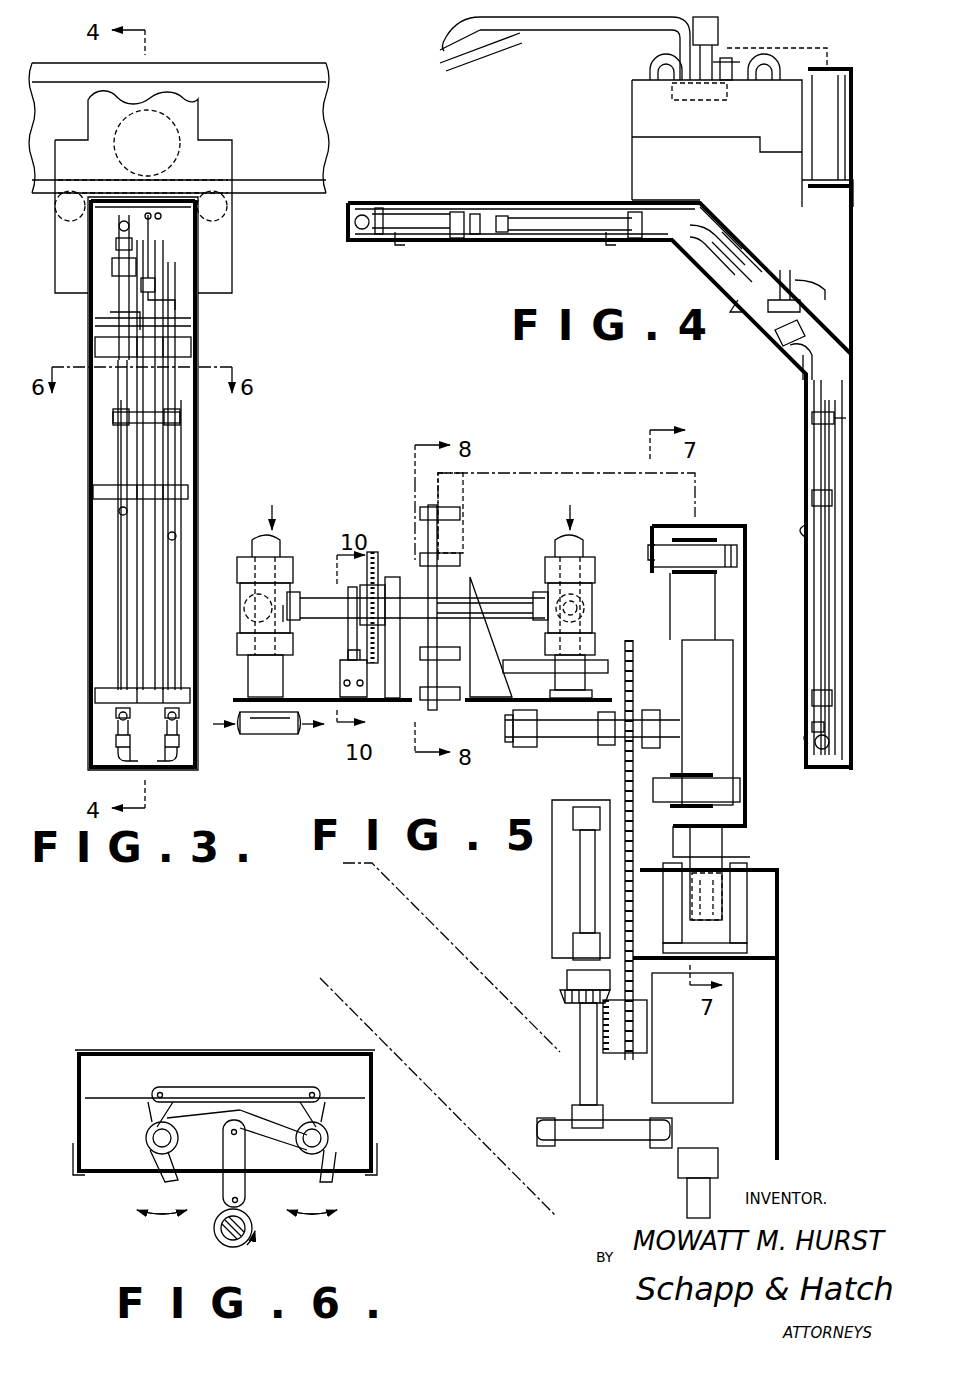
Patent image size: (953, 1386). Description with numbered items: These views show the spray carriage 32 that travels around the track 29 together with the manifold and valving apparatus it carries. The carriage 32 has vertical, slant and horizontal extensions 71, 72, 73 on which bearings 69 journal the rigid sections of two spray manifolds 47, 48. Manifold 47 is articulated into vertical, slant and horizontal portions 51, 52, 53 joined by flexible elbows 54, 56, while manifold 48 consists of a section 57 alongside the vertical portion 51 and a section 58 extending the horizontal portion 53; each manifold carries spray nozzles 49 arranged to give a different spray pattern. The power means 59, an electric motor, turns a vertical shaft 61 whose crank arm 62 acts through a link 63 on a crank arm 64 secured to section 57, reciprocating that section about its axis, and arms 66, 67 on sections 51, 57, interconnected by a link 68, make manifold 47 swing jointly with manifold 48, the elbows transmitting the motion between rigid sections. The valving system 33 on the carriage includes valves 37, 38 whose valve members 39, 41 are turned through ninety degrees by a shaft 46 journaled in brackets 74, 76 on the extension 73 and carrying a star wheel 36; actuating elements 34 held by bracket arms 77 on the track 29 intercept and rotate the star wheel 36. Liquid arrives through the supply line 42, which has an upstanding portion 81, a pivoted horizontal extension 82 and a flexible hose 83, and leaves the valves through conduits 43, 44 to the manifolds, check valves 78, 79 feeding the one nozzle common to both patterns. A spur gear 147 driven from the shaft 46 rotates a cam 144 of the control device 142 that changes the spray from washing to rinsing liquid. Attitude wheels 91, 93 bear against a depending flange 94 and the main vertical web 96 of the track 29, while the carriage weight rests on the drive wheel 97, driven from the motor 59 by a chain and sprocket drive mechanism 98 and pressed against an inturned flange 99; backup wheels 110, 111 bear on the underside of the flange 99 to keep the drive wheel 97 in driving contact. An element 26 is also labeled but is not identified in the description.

In FIG. 4, the support bracket 26 is at (830, 47).
In FIG. 3, the track 29 is at (269, 63).
In FIG. 4, the track 29 is at (853, 86).
In FIG. 5, the track 29 is at (734, 522).
In FIG. 3, the carriage 32 is at (86, 309).
In FIG. 4, the carriage 32 is at (705, 282).
In FIG. 6, the carriage 32 is at (128, 1050).
In FIG. 4, the valving system 33 is at (630, 123).
In FIG. 5, the valving system 33 is at (553, 470).
In FIG. 4, the actuating elements 34 is at (742, 62).
In FIG. 5, the actuating elements 34 is at (466, 498).
In FIG. 5, the star wheel 36 is at (428, 530).
In FIG. 4, the valve 37 is at (652, 76).
In FIG. 5, the valve 37 is at (286, 578).
In FIG. 4, the valve 38 is at (776, 80).
In FIG. 5, the valve 38 is at (547, 582).
In FIG. 5, the valve member 39 is at (283, 618).
In FIG. 5, the valve member 41 is at (592, 613).
In FIG. 4, the liquid supply line 42 is at (720, 28).
In FIG. 3, the conduit 43 is at (138, 558).
In FIG. 4, the conduit 43 is at (842, 632).
In FIG. 5, the conduit 43 is at (556, 742).
In FIG. 3, the conduit 44 is at (156, 458).
In FIG. 5, the conduit 44 is at (280, 735).
In FIG. 5, the shaft 46 is at (498, 598).
In FIG. 3, the spray manifold 47 is at (116, 590).
In FIG. 4, the spray manifold 47 is at (826, 568).
In FIG. 6, the spray manifold 47 is at (144, 1138).
In FIG. 3, the spray manifold 48 is at (178, 483).
In FIG. 6, the spray manifold 48 is at (330, 1138).
In FIG. 3, the spray nozzles 49 is at (120, 512).
In FIG. 4, the spray nozzles 49 is at (398, 240).
In FIG. 3, the vertical portion 51 is at (122, 640).
In FIG. 4, the vertical portion 51 is at (812, 444).
In FIG. 6, the vertical portion 51 is at (152, 1163).
In FIG. 3, the slant portion 52 is at (122, 296).
In FIG. 4, the slant portion 52 is at (748, 268).
In FIG. 3, the horizontal portion 53 is at (118, 228).
In FIG. 4, the horizontal portion 53 is at (548, 235).
In FIG. 4, the flexible elbow 54 is at (704, 216).
In FIG. 3, the flexible elbow 56 is at (120, 345).
In FIG. 4, the flexible elbow 56 is at (806, 372).
In FIG. 3, the manifold section 57 is at (173, 436).
In FIG. 5, the manifold section 57 is at (688, 1196).
In FIG. 6, the manifold section 57 is at (330, 1170).
In FIG. 4, the manifold section 58 is at (408, 218).
In FIG. 5, the power means 59 is at (700, 1059).
In FIG. 3, the vertical shaft 61 is at (145, 278).
In FIG. 4, the vertical shaft 61 is at (798, 283).
In FIG. 5, the vertical shaft 61 is at (586, 1062).
In FIG. 6, the vertical shaft 61 is at (229, 1241).
In FIG. 5, the crank arm 62 is at (572, 1122).
In FIG. 6, the crank arm 62 is at (218, 1226).
In FIG. 3, the link 63 is at (165, 300).
In FIG. 5, the link 63 is at (612, 1149).
In FIG. 6, the link 63 is at (226, 1190).
In FIG. 5, the crank arm 64 is at (688, 1152).
In FIG. 6, the crank arm 64 is at (236, 1114).
In FIG. 6, the arm 66 is at (152, 1110).
In FIG. 6, the arm 67 is at (316, 1120).
In FIG. 3, the link 68 is at (128, 422).
In FIG. 4, the link 68 is at (838, 414).
In FIG. 6, the link 68 is at (220, 1088).
In FIG. 3, the bearings 69 is at (113, 490).
In FIG. 4, the bearings 69 is at (458, 240).
In FIG. 4, the vertical extension 71 is at (848, 514).
In FIG. 4, the slant extension 72 is at (740, 244).
In FIG. 4, the horizontal extension 73 is at (556, 205).
In FIG. 5, the bracket 74 is at (386, 700).
In FIG. 5, the bracket 76 is at (488, 652).
In FIG. 5, the bracket arms 77 is at (505, 471).
In FIG. 4, the check valve 78 is at (473, 212).
In FIG. 4, the check valve 79 is at (505, 216).
In FIG. 4, the upstanding portion 81 is at (652, 42).
In FIG. 4, the horizontal extension 82 is at (546, 33).
In FIG. 4, the flexible hose 83 is at (436, 36).
In FIG. 5, the attitude wheel 91 is at (662, 553).
In FIG. 5, the attitude wheel 93 is at (716, 780).
In FIG. 5, the depending flange 94 is at (648, 546).
In FIG. 5, the main vertical web 96 is at (748, 812).
In FIG. 3, the drive wheel 97 is at (110, 156).
In FIG. 5, the drive wheel 97 is at (718, 726).
In FIG. 5, the chain and sprocket drive mechanism 98 is at (598, 905).
In FIG. 5, the inturned flange 99 is at (712, 832).
In FIG. 3, the backup wheel 110 is at (56, 211).
In FIG. 3, the backup wheel 111 is at (228, 211).
In FIG. 5, the backup wheel 111 is at (722, 900).
In FIG. 5, the control device 142 is at (346, 641).
In FIG. 5, the cam 144 is at (348, 596).
In FIG. 5, the spur gear 147 is at (375, 552).